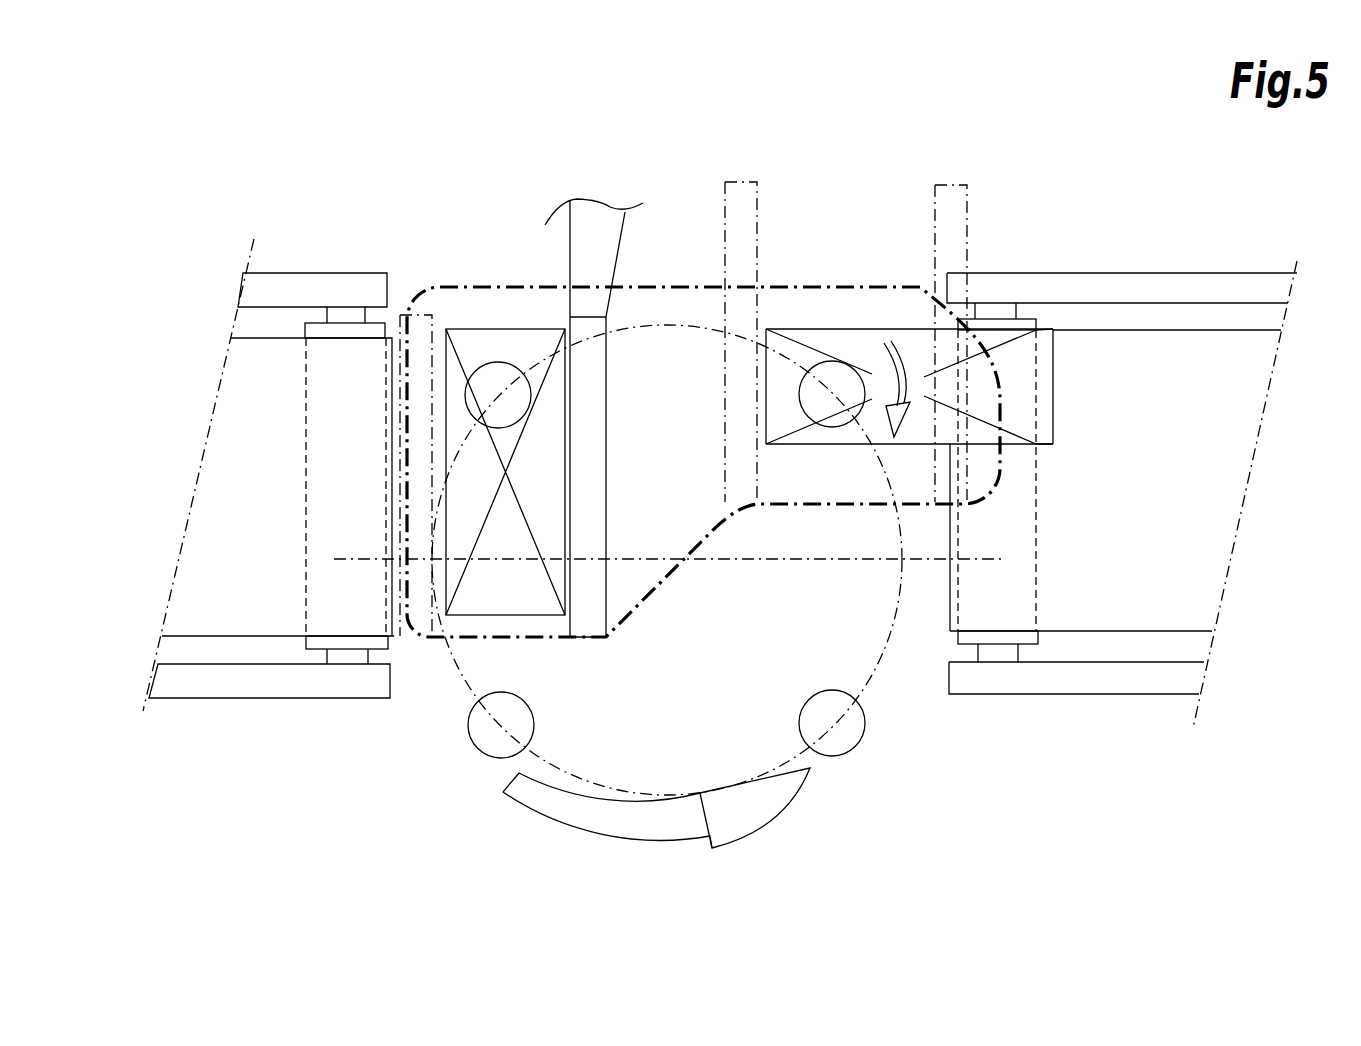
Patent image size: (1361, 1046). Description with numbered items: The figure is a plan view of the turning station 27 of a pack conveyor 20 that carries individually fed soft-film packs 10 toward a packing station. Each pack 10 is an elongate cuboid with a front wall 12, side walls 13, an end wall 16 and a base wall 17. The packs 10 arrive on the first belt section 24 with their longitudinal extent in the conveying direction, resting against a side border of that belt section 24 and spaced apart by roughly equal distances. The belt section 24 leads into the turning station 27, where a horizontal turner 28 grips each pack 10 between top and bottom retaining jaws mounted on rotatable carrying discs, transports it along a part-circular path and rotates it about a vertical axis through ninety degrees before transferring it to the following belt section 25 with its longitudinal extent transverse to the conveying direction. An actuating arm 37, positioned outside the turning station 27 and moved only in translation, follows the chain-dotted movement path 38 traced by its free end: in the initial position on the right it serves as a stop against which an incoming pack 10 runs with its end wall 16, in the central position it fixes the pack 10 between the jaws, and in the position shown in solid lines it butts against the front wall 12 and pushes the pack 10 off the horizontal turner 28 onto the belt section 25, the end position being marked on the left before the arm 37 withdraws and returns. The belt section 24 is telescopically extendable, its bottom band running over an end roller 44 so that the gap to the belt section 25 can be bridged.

The pack 10 is at (668, 499).
The front wall 12 is at (836, 196).
The side wall 13 is at (918, 446).
The end wall 16 is at (748, 378).
The base wall 17 is at (1055, 388).
The pack conveyor 20 is at (1073, 210).
The first belt section 24 is at (1235, 250).
The belt section 25 is at (286, 244).
The turning station 27 is at (825, 327).
The horizontal turner 28 is at (457, 794).
The actuating arm 37 is at (437, 327).
The movement path 38 is at (655, 265).
The end roller 44 is at (972, 637).